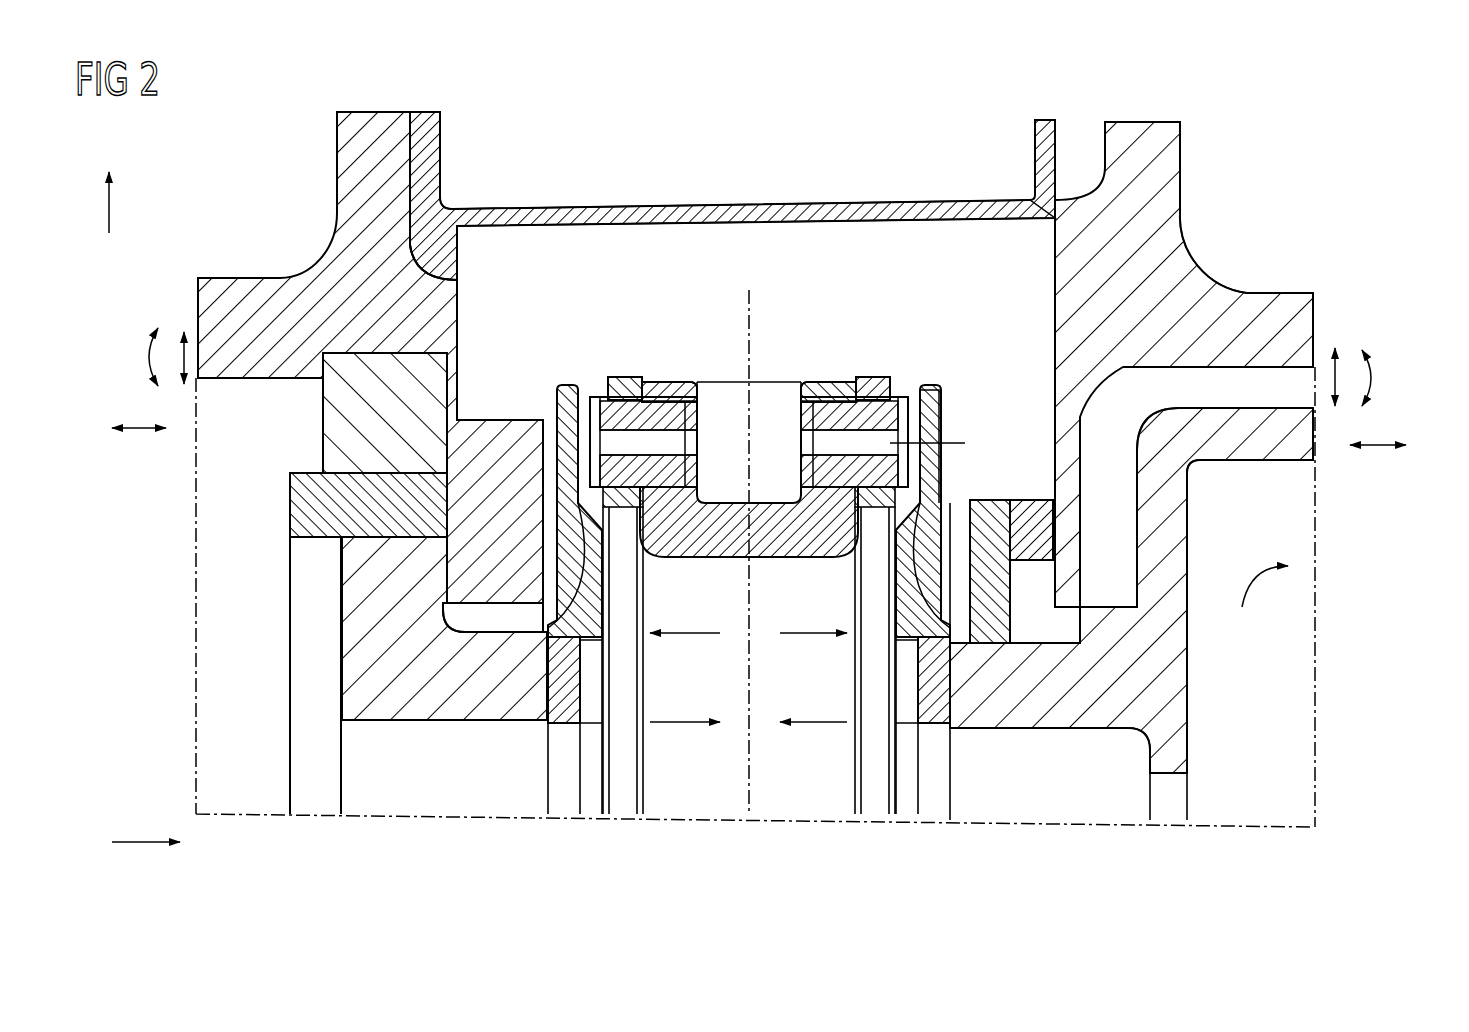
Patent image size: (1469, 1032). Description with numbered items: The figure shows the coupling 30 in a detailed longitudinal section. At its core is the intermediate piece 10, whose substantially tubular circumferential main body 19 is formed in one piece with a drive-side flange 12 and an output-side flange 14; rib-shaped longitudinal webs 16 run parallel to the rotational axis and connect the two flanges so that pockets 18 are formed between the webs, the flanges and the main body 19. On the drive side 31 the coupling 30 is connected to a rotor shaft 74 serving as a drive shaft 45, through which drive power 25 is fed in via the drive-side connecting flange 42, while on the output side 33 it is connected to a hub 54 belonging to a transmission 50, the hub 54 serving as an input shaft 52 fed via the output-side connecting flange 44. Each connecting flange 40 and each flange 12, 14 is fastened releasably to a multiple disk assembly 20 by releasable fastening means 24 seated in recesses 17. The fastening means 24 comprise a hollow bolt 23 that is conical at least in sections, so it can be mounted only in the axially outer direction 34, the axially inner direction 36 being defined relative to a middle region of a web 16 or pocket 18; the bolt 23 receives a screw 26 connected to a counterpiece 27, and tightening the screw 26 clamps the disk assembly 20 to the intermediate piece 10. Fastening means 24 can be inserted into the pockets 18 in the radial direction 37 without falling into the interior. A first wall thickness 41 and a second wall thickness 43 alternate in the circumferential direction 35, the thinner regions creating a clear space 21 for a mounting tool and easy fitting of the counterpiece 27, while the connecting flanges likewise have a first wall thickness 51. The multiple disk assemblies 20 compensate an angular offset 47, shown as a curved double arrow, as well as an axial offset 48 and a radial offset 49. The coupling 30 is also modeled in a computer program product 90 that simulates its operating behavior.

The intermediate piece 10 is at (600, 562).
The drive-side flange 12 is at (697, 383).
The output-side flange 14 is at (833, 380).
The longitudinal webs 16 is at (750, 300).
The recesses 17 is at (660, 383).
The pockets 18 is at (727, 443).
The circumferential main body 19 is at (792, 560).
The multiple disk assemblies 20 is at (580, 515).
The clear space 21 is at (585, 390).
The bolt 23 is at (709, 237).
The releasable fastening means 24 is at (709, 237).
The drive power 25 is at (143, 840).
The screw 26 is at (890, 432).
The counterpiece 27 is at (607, 380).
The coupling 30 is at (124, 155).
The drive side 31 is at (241, 268).
The output side 33 is at (1262, 508).
The axially outer direction 34 is at (685, 636).
The circumferential direction 35 is at (1270, 585).
The axially inner direction 36 is at (680, 725).
The radial direction 37 is at (112, 200).
The connecting flange 40 is at (567, 385).
The first wall thickness 41 is at (547, 450).
The drive-side connecting flange 42 is at (732, 196).
The second wall thickness 43 is at (680, 383).
The output-side connecting flange 44 is at (948, 288).
The drive shaft 45 is at (397, 680).
The angular offset 47 is at (145, 355).
The axial offset 48 is at (140, 432).
The radial offset 49 is at (177, 352).
The transmission 50 is at (1278, 155).
The first wall thickness 51 is at (1168, 205).
The input shaft 52 is at (1145, 690).
The hub 54 is at (1131, 590).
The rotor shaft 74 is at (472, 726).
The computer program product 90 is at (1190, 882).